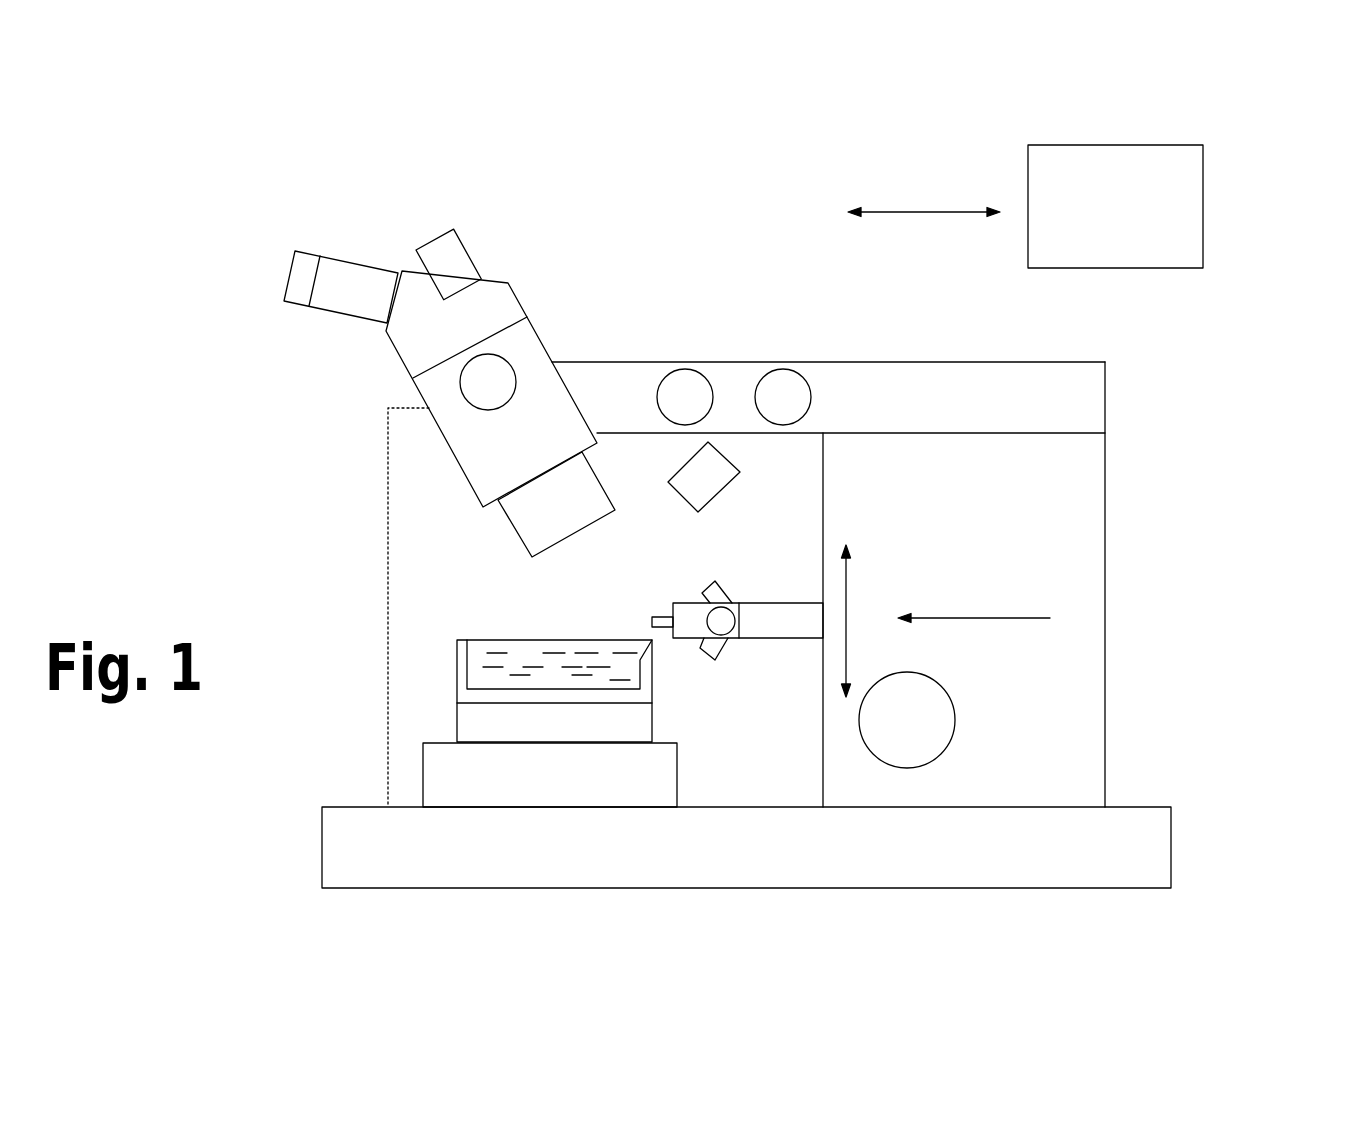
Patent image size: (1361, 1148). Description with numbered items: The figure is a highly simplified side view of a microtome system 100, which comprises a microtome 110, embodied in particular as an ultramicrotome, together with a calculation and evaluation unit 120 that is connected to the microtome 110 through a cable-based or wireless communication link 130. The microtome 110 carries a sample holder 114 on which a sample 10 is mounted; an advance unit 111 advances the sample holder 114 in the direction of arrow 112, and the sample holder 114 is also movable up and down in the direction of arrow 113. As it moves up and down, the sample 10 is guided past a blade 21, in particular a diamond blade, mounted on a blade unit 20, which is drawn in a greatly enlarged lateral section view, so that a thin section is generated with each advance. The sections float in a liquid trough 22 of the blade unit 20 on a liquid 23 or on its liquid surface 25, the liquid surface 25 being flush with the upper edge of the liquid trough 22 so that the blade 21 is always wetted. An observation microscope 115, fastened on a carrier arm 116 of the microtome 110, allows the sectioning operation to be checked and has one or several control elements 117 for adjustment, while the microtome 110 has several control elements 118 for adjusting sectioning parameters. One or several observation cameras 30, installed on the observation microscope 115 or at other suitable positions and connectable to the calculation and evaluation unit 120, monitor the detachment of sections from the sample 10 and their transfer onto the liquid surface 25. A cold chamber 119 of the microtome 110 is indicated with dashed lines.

The microtome system 100 is at (1258, 672).
The microtome 110 is at (1105, 360).
The advance unit 111 is at (1053, 552).
The arrow 112 is at (1013, 618).
The arrow 113 is at (846, 590).
The sample holder 114 is at (767, 615).
The observation microscope 115 is at (360, 224).
The carrier arm 116 is at (940, 397).
The control elements 117 is at (500, 382).
The control elements 118 is at (695, 385).
The cold chamber 119 is at (388, 450).
The calculation and evaluation unit 120 is at (1115, 206).
The communication link 130 is at (917, 210).
The sample 10 is at (650, 617).
The blade unit 20 is at (527, 606).
The blade 21 is at (650, 637).
The liquid trough 22 is at (457, 640).
The liquid 23 is at (478, 680).
The liquid surface 25 is at (482, 640).
The observation cameras 30 is at (452, 258).